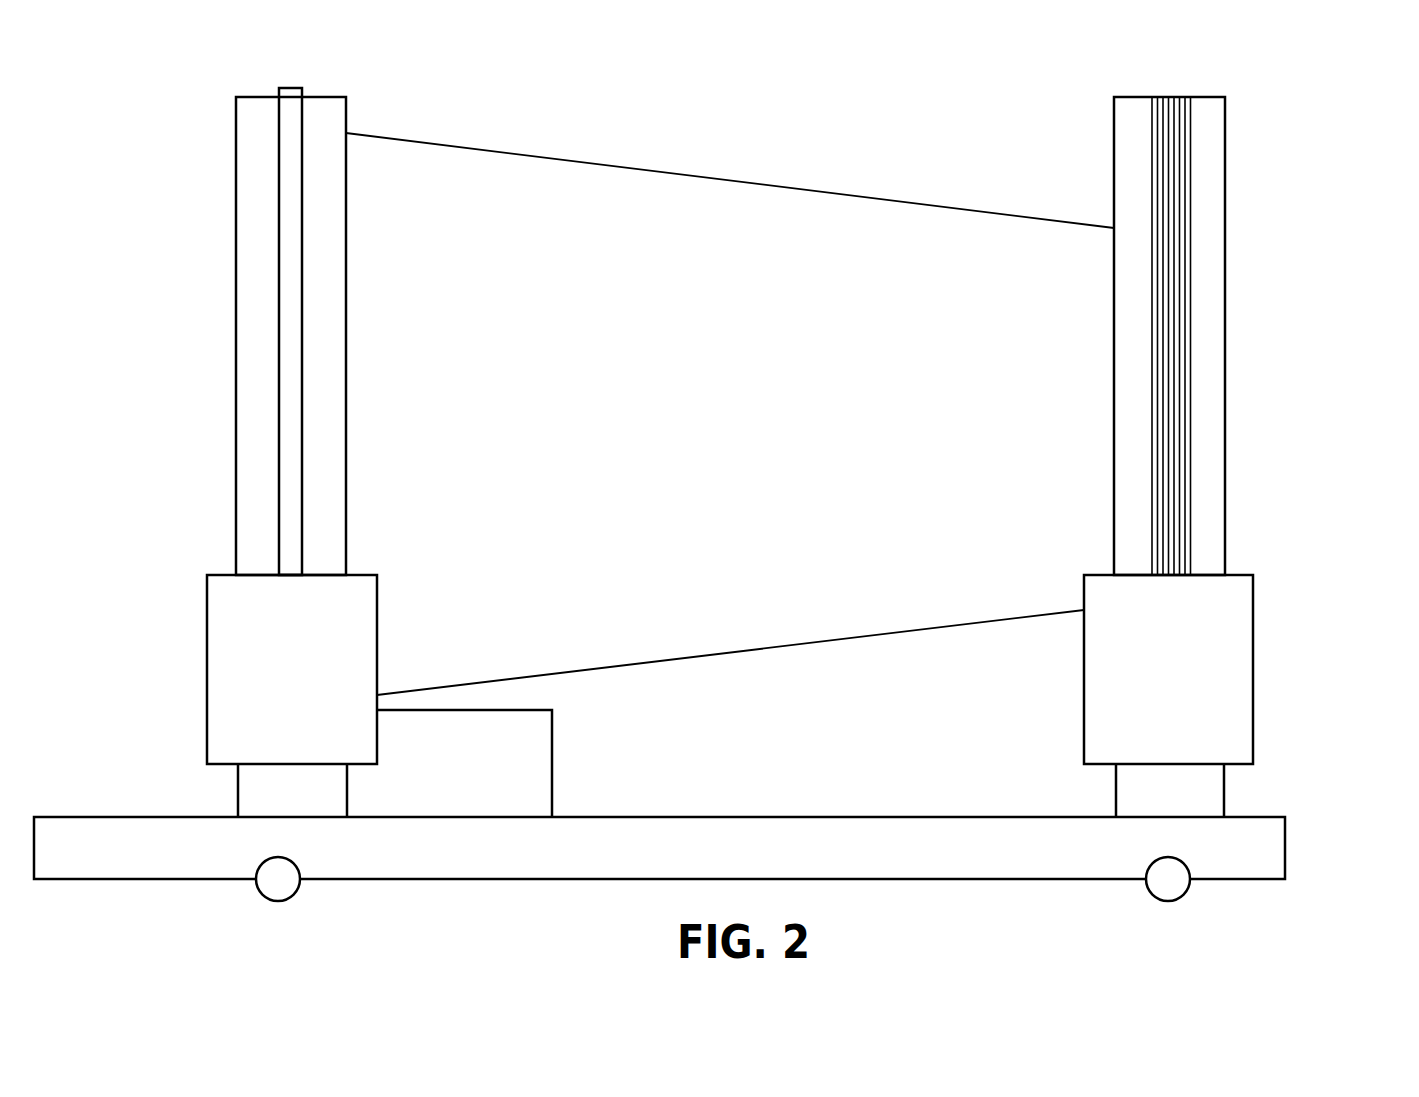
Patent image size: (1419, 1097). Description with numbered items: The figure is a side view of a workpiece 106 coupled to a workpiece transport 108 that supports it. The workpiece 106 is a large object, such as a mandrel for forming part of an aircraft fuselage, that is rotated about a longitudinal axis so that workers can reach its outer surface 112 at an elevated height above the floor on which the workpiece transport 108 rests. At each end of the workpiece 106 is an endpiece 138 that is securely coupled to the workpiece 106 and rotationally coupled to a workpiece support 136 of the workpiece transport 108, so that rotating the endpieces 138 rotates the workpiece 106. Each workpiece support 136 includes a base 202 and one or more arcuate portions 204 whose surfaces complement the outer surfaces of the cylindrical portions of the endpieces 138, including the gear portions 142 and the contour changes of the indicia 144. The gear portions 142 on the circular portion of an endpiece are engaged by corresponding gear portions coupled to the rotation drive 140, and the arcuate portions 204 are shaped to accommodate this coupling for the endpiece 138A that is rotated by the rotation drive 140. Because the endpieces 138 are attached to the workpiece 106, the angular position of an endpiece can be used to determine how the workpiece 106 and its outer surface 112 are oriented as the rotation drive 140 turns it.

The workpiece 106 is at (730, 414).
The workpiece transport 108 is at (659, 859).
The outer surface 112 is at (645, 170).
The workpiece supports 136 is at (730, 696).
The endpieces 138 is at (1259, 308).
The endpiece 138A is at (389, 314).
The rotation drive 140 is at (464, 763).
The gear portions 142 is at (295, 88).
The indicia 144 is at (1170, 95).
The bases 202 is at (731, 790).
The arcuate portions 204 is at (730, 669).